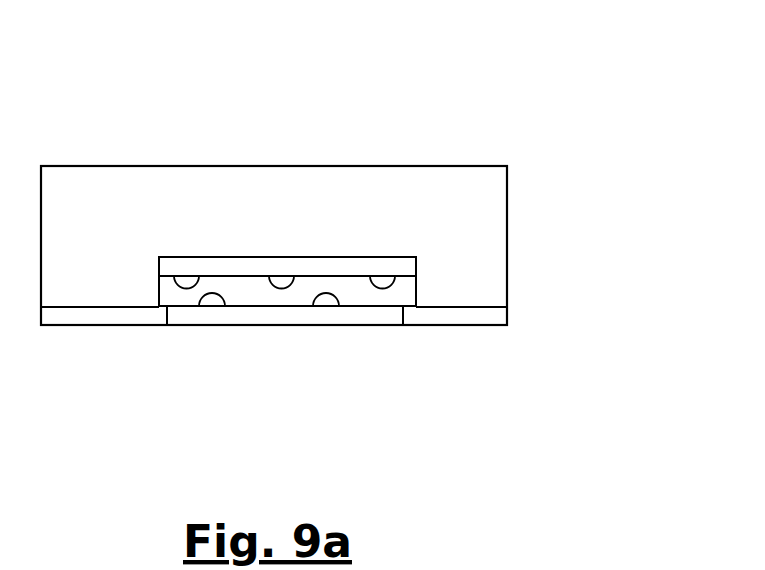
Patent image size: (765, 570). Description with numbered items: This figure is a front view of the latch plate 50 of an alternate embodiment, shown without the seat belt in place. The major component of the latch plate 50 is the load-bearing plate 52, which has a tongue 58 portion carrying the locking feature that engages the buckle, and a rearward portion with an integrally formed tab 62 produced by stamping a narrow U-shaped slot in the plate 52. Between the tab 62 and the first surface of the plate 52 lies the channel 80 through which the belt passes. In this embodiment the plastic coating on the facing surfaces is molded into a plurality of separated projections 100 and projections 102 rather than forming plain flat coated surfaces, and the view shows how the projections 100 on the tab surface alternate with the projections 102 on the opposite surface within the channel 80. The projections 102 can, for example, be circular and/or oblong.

The latch plate 50 is at (333, 259).
The load-bearing plate 52 is at (488, 227).
The tongue 58 is at (292, 312).
The tab 62 is at (332, 265).
The channel 80 is at (357, 287).
The projections 100 is at (186, 282).
The projections 102 is at (213, 298).